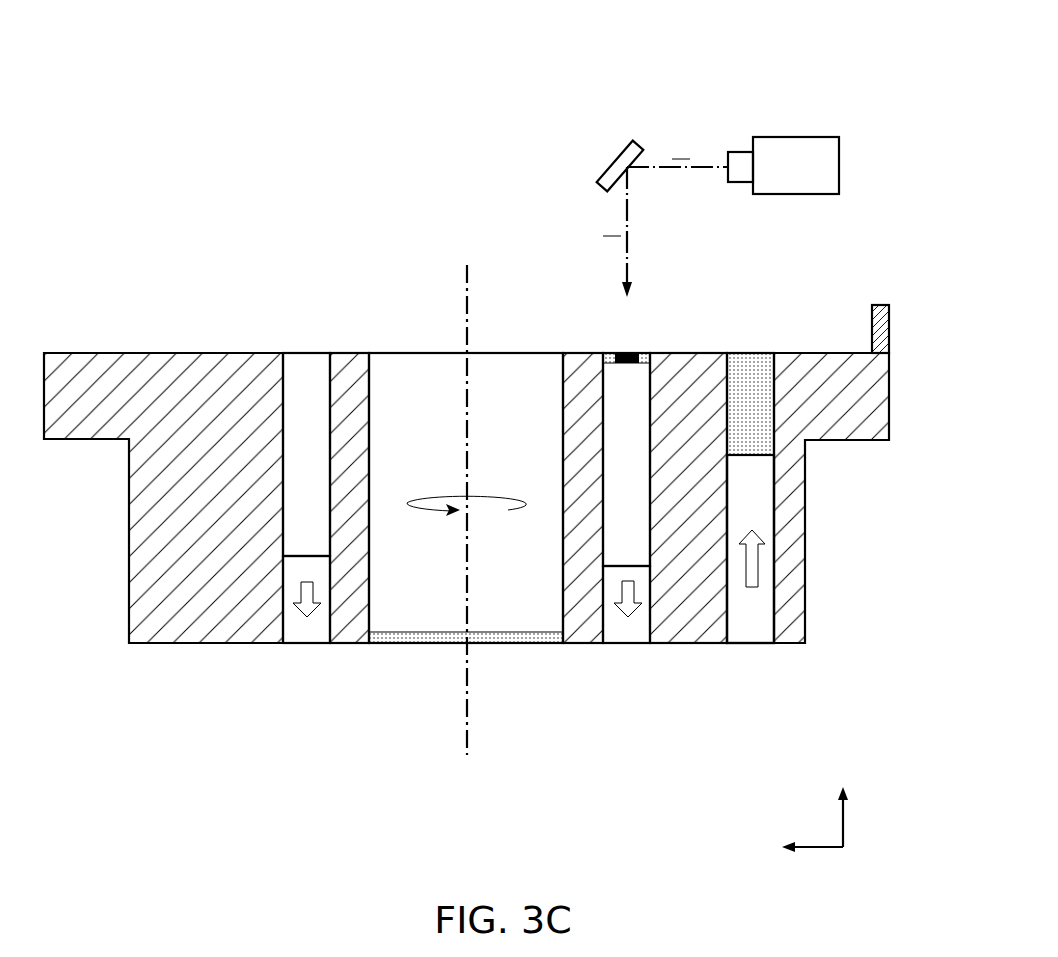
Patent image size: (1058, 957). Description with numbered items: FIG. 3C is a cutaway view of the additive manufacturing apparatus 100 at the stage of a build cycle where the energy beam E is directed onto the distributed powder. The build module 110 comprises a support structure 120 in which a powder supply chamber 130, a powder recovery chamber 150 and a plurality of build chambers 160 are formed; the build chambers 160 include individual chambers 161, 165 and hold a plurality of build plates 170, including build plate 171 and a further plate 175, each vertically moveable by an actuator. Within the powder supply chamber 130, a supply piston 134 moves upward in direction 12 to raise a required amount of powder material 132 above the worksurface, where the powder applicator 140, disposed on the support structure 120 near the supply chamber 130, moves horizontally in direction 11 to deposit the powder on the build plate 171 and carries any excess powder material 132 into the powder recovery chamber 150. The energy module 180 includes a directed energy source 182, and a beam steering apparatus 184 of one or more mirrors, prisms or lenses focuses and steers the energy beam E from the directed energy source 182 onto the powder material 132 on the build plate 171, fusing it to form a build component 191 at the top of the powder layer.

The additive manufacturing apparatus 100 is at (224, 46).
The build module 110 is at (95, 262).
The support structure 120 is at (87, 433).
The powder supply chamber 130 is at (804, 518).
The powder material 132 is at (411, 634).
The supply piston 134 is at (755, 503).
The powder applicator 140 is at (892, 330).
The powder recovery chamber 150 is at (488, 352).
The plurality of build chambers 160 is at (357, 683).
The outlet channel 161 is at (633, 648).
The outlet channel 165 is at (312, 648).
The plurality of build plates 170 is at (328, 292).
The build plate 171 is at (577, 352).
The inlet channel 175 is at (307, 352).
The energy module 180 is at (856, 146).
The directed energy source 182 is at (800, 137).
The beam steering apparatus 184 is at (613, 158).
The build component 191 is at (627, 365).
The horizontal direction 11 is at (818, 850).
The upward direction 12 is at (848, 790).